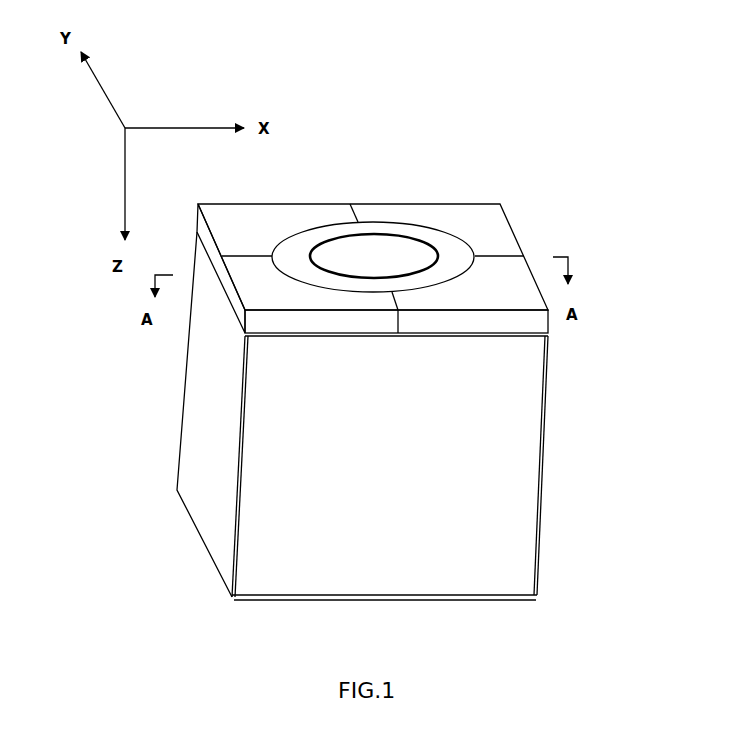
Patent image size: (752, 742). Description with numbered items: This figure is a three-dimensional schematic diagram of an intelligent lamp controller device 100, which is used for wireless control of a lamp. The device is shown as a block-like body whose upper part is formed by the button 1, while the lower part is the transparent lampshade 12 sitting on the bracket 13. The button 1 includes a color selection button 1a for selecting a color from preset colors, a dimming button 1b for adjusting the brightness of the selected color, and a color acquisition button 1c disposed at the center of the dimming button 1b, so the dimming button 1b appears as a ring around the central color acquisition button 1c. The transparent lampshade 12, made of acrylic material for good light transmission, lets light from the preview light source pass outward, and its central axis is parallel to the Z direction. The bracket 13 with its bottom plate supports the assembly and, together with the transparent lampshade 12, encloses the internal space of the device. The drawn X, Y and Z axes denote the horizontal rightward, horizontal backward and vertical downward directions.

The intelligent lamp controller device 100 is at (373, 160).
The button 1 is at (440, 232).
The color selection button 1a is at (418, 257).
The dimming button 1b is at (455, 239).
The color acquisition button 1c is at (645, 234).
The transparent lampshade 12 is at (409, 414).
The bracket 13 is at (436, 621).